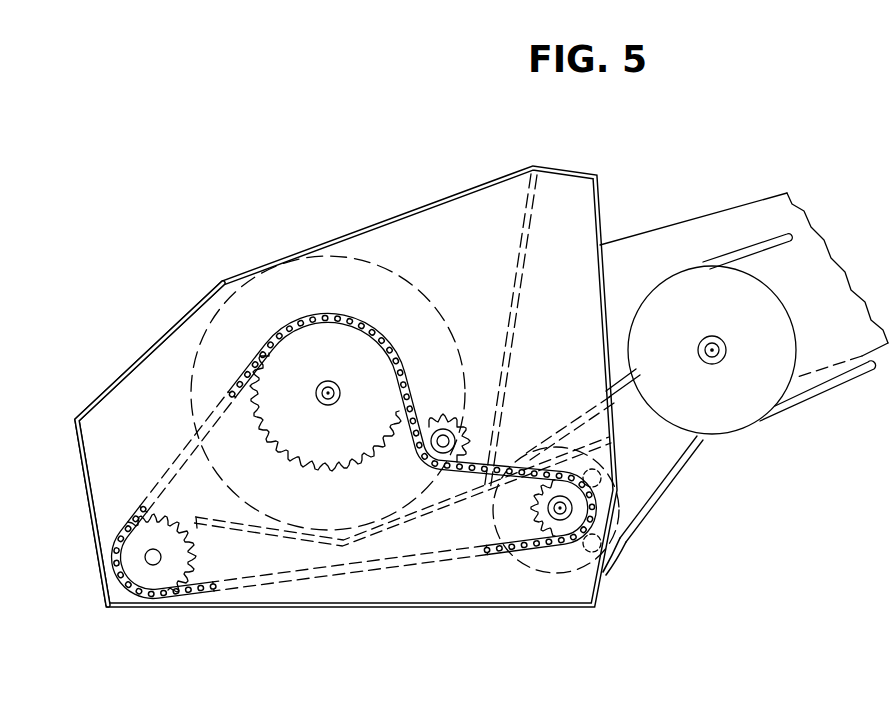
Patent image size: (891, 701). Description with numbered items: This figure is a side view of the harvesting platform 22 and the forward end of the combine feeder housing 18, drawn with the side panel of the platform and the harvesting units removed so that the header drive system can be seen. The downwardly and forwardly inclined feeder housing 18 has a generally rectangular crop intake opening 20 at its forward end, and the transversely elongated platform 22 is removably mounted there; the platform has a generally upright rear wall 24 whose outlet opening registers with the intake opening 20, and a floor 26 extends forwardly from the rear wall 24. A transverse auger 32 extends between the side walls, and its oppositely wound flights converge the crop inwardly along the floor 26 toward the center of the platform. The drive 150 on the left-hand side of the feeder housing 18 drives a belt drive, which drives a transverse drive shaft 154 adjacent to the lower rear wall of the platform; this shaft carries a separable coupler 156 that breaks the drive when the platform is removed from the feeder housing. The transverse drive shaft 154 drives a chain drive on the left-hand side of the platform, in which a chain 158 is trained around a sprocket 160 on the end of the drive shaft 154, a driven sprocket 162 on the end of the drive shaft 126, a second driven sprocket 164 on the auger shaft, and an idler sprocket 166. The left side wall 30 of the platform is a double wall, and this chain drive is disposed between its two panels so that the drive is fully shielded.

The feeder housing 18 is at (698, 214).
The crop intake opening 20 is at (508, 318).
The platform 22 is at (429, 196).
The rear wall 24 is at (529, 207).
The floor 26 is at (296, 537).
The left side wall 30 is at (90, 462).
The transverse auger 32 is at (197, 344).
The drive shaft 126 is at (153, 566).
The drive 150 is at (807, 395).
The transverse drive shaft 154 is at (559, 514).
The separable coupler 156 is at (627, 535).
The chain 158 is at (505, 548).
The sprocket 160 is at (530, 512).
The driven sprocket 162 is at (192, 558).
The second driven sprocket 164 is at (337, 436).
The idler sprocket 166 is at (450, 420).